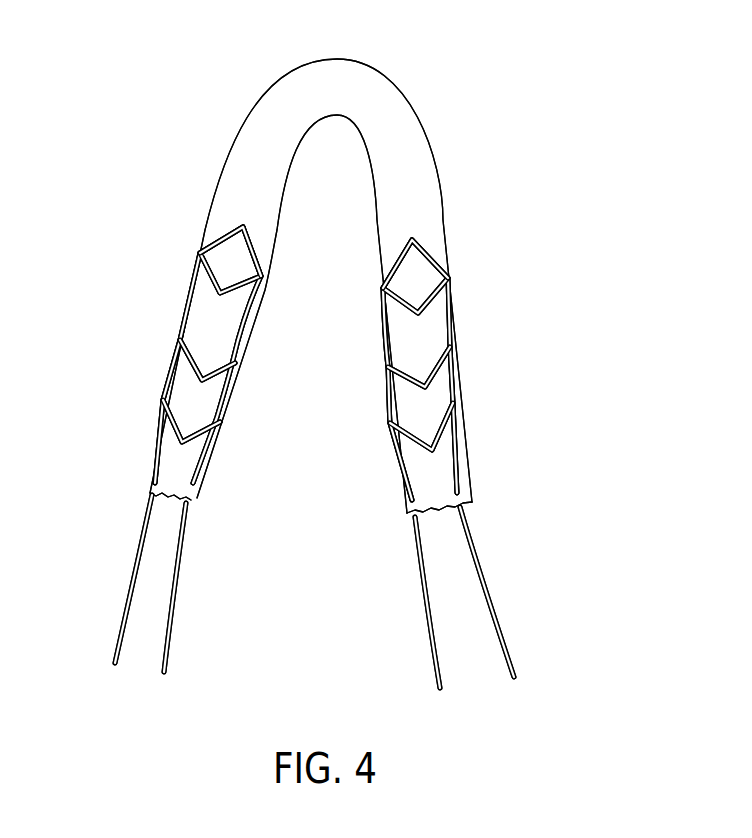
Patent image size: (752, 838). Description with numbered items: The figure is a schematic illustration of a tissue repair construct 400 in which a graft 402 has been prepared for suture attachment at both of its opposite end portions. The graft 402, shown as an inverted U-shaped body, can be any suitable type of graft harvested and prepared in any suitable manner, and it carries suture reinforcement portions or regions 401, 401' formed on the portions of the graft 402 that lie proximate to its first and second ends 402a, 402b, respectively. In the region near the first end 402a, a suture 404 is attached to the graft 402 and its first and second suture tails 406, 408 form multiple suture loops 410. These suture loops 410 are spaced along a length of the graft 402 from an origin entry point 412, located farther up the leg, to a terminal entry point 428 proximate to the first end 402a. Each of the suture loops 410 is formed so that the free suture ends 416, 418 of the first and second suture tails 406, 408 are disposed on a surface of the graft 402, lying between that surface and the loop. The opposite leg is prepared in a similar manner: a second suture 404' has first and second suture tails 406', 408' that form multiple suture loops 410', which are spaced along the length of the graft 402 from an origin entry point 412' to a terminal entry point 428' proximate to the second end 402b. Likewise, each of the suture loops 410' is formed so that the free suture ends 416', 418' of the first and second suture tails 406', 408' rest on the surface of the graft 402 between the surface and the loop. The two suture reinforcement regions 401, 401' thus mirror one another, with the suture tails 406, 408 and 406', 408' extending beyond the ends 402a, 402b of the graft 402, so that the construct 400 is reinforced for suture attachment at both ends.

The tissue repair construct 400 is at (572, 198).
The suture reinforcement region 401 is at (490, 370).
The suture reinforcement region 401' is at (147, 355).
The graft 402 is at (380, 68).
The first end 402a is at (485, 495).
The second end 402b is at (213, 496).
The suture 404 is at (493, 597).
The suture 404' is at (118, 583).
The first suture tail 406 is at (513, 592).
The first suture tail 406' is at (202, 587).
The second suture tail 408 is at (404, 602).
The second suture tail 408' is at (101, 579).
The suture loops 410 is at (455, 370).
The suture loops 410' is at (186, 355).
The origin entry point 412 is at (433, 253).
The origin entry point 412' is at (214, 240).
The free suture end 416 is at (464, 366).
The free suture end 416' is at (242, 355).
The free suture end 418 is at (372, 370).
The free suture end 418' is at (176, 355).
The terminal entry point 428 is at (448, 364).
The terminal entry point 428' is at (182, 347).